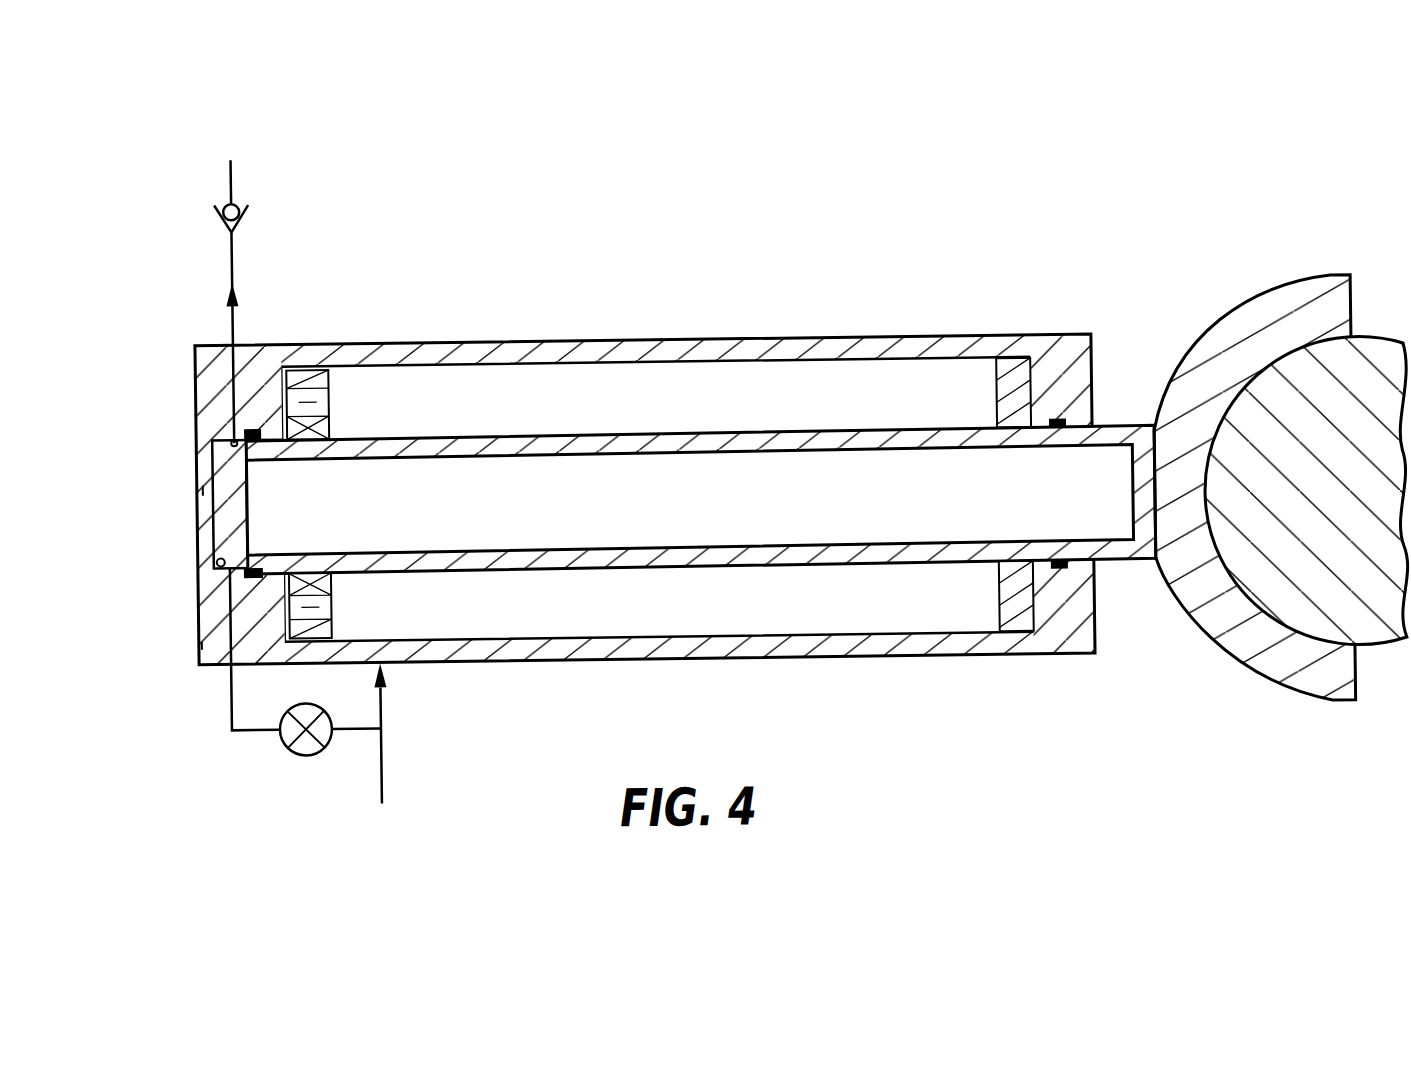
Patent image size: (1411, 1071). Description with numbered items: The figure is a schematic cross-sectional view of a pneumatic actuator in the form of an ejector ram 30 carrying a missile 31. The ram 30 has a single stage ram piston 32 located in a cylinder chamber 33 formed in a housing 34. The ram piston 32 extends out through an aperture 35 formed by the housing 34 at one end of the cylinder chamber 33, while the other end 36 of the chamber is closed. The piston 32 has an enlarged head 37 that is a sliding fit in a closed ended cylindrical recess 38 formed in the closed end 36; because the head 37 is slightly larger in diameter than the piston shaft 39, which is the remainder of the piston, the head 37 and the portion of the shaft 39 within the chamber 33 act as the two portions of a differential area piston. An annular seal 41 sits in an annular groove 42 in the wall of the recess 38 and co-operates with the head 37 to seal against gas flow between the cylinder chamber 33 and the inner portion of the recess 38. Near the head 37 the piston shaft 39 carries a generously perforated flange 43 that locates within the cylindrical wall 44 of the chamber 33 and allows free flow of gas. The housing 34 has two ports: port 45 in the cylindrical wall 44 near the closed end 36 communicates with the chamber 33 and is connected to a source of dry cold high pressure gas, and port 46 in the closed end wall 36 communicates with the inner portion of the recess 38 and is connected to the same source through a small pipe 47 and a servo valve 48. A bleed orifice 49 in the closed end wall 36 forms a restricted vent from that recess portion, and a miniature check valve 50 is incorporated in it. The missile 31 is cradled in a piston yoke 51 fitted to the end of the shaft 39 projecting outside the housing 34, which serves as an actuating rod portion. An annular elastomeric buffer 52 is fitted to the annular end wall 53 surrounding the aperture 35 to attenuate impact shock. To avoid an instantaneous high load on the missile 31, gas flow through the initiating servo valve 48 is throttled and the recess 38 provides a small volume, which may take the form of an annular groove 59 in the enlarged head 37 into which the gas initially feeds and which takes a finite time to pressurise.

The ejector ram 30 is at (950, 335).
The missile 31 is at (1333, 569).
The ram piston 32 is at (768, 497).
The cylinder chamber 33 is at (552, 393).
The housing 34 is at (650, 350).
The aperture 35 is at (1085, 428).
The closed end 36 is at (208, 614).
The enlarged head 37 is at (233, 532).
The cylindrical recess 38 is at (203, 485).
The piston shaft 39 is at (855, 445).
The annular seal 41 is at (256, 419).
The annular groove 42 is at (253, 574).
The flange 43 is at (315, 402).
The cylindrical wall 44 is at (490, 353).
The port 45 is at (382, 668).
The port 46 is at (200, 640).
The small pipe 47 is at (229, 710).
The servo valve 48 is at (303, 751).
The bleed orifice 49 is at (203, 352).
The miniature check valve 50 is at (229, 202).
The piston yoke 51 is at (1264, 318).
The annular elastomeric buffer 52 is at (1013, 602).
The annular end wall 53 is at (1068, 606).
The annular groove 59 is at (219, 553).